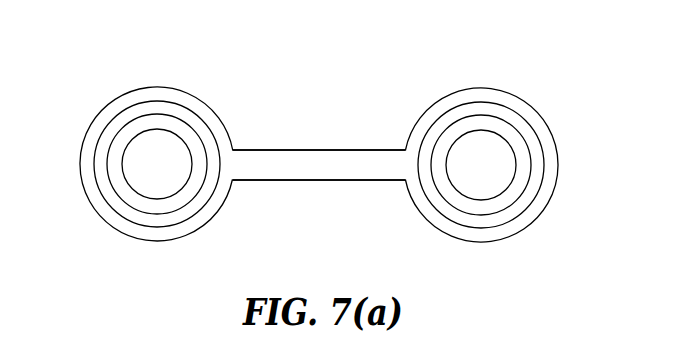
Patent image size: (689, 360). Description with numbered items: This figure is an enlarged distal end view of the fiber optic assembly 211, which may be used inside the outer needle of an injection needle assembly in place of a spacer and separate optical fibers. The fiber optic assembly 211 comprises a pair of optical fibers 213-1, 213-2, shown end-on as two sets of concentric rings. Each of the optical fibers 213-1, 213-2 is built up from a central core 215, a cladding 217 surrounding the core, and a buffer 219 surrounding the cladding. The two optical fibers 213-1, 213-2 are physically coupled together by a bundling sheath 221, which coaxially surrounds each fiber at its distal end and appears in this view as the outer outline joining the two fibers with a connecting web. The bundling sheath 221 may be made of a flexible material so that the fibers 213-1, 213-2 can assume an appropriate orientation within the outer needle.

The fiber optic assembly 211 is at (322, 137).
The optical fiber 213-1 is at (125, 215).
The optical fiber 213-2 is at (518, 217).
The core 215 is at (153, 150).
The cladding 217 is at (122, 178).
The buffer 219 is at (203, 197).
The bundling sheath 221 is at (338, 165).